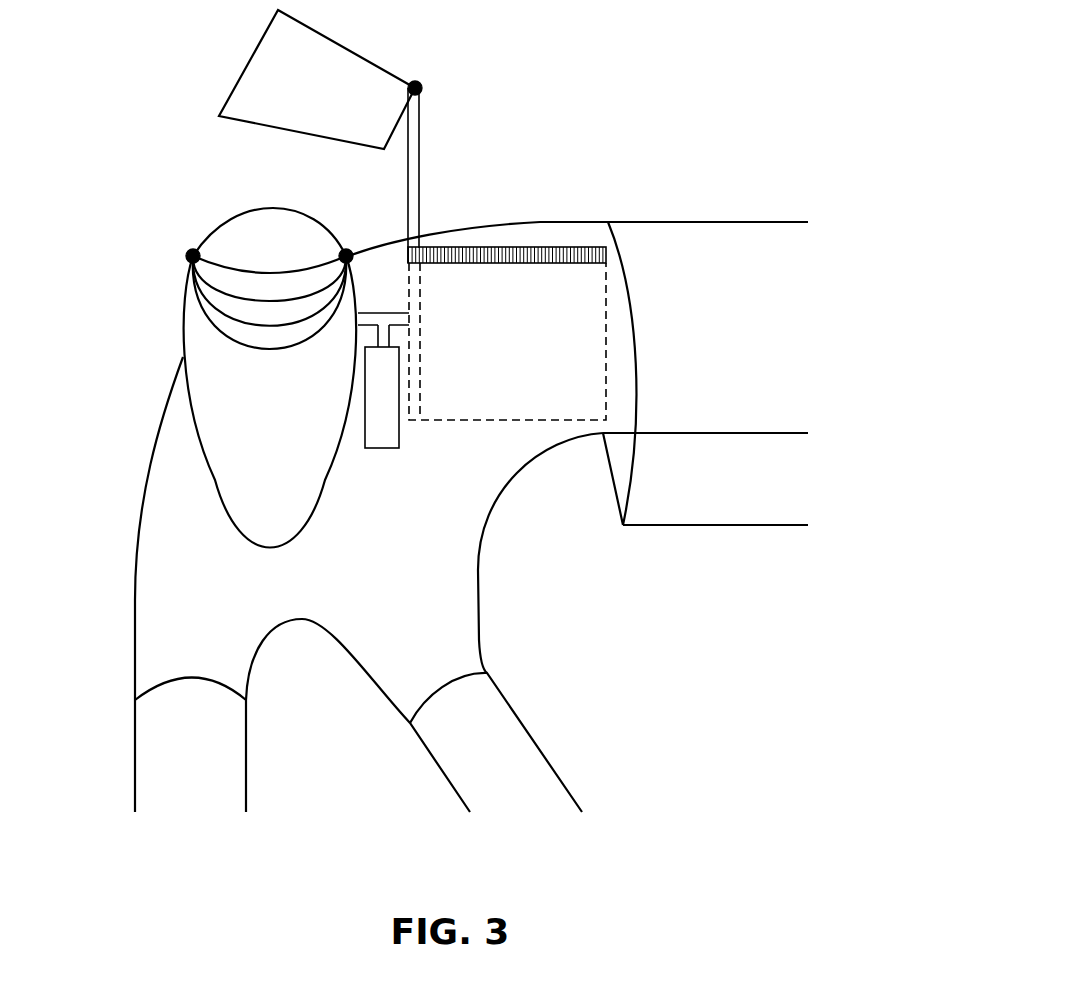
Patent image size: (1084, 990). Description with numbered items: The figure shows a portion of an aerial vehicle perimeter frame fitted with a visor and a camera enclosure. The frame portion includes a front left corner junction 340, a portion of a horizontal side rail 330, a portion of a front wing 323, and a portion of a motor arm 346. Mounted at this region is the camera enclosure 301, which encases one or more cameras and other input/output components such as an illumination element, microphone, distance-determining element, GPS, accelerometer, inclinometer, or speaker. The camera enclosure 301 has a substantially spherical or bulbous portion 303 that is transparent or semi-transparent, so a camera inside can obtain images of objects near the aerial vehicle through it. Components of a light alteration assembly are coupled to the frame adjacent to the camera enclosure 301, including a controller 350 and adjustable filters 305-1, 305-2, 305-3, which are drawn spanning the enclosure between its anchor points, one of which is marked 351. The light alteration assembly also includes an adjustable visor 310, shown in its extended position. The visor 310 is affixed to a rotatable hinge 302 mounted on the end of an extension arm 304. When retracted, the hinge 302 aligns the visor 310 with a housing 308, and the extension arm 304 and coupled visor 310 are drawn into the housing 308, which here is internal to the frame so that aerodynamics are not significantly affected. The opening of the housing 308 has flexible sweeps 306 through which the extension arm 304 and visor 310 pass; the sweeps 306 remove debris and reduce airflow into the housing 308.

The adjustable visor 310 is at (345, 70).
The rotatable hinge 302 is at (423, 85).
The extension arm 304 is at (420, 160).
The flexible sweeps 306 is at (530, 257).
The housing 308 is at (507, 341).
The front wing 323 is at (670, 257).
The substantially spherical or bulbous portion 303 is at (245, 223).
The adjustable filter 305-1 is at (222, 297).
The adjustable filter 305-2 is at (234, 312).
The adjustable filter 305-3 is at (263, 340).
The left anchor point 351 is at (185, 252).
The camera enclosure 301 is at (348, 250).
The front left corner junction 340 is at (172, 535).
The controller 350 is at (380, 430).
The horizontal side rail 330 is at (163, 755).
The motor arm 346 is at (512, 745).